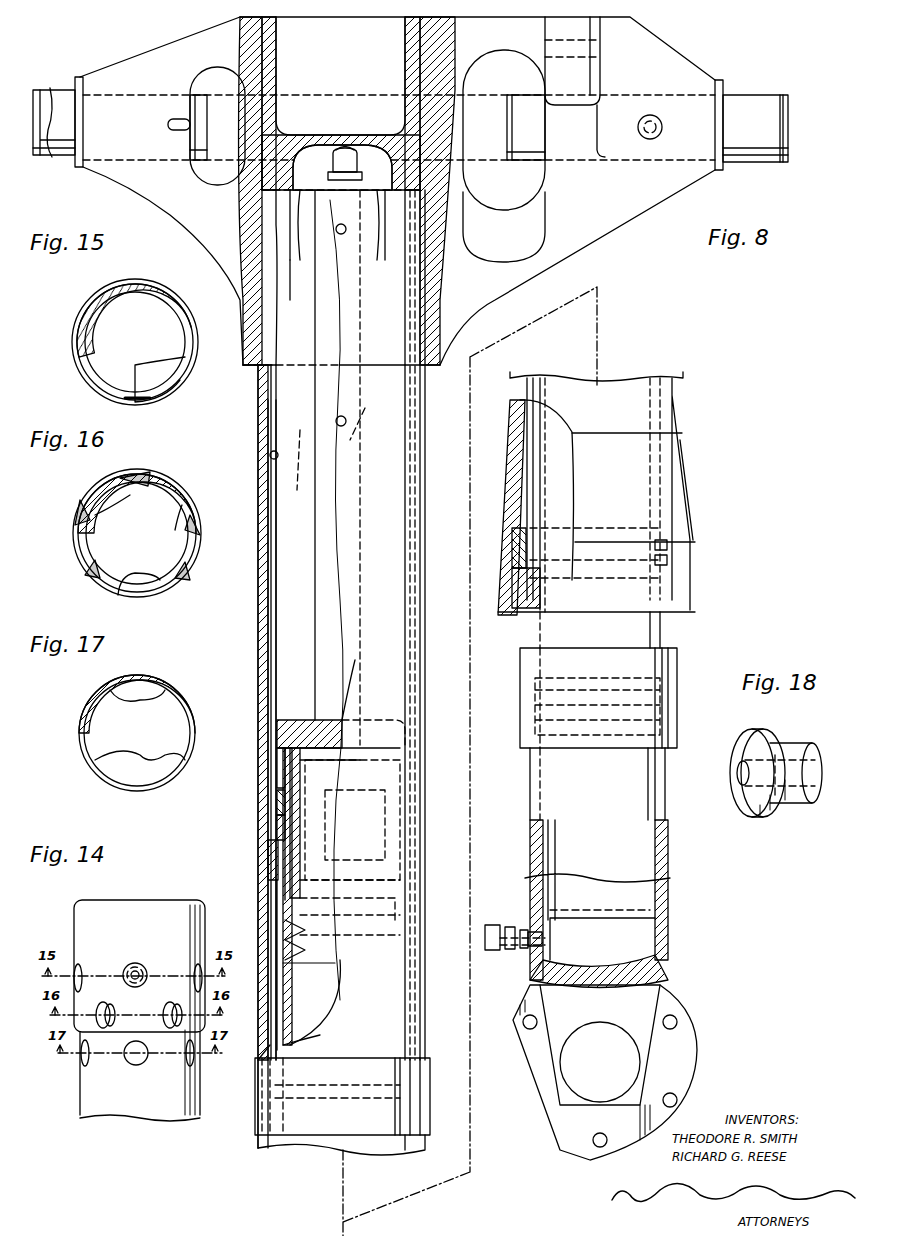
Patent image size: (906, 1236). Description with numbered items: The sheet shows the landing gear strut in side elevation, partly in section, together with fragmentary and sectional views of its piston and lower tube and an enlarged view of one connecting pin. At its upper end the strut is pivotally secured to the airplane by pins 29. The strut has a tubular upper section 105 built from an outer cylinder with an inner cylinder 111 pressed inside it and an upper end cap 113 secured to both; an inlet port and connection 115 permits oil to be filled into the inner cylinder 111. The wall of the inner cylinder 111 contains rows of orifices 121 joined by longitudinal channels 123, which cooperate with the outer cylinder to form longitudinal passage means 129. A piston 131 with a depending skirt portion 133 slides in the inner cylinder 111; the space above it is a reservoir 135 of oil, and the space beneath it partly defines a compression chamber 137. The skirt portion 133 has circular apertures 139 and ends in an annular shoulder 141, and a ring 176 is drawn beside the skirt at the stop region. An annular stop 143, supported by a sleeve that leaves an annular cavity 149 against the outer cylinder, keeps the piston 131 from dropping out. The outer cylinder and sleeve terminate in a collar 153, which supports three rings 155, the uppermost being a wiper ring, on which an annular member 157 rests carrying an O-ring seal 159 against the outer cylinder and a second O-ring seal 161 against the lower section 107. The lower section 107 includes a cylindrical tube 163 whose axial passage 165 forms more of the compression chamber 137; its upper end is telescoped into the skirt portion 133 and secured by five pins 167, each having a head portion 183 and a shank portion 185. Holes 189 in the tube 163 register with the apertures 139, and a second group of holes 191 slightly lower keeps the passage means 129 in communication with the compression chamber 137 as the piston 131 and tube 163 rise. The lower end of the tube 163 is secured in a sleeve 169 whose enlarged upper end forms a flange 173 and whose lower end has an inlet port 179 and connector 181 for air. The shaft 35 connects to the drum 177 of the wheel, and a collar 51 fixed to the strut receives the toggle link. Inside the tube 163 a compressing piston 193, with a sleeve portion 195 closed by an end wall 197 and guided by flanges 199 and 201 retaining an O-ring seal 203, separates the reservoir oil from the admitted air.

In FIG. 8, the pins 29 is at (62, 95).
In FIG. 8, the upper end cap 113 is at (290, 145).
In FIG. 8, the inlet port and connection 115 is at (348, 150).
In FIG. 8, the orifices 121 is at (338, 232).
In FIG. 8, the reservoir 135 is at (297, 270).
In FIG. 8, the longitudinal passage means 129 is at (268, 495).
In FIG. 8, the inner cylinder 111 is at (276, 550).
In FIG. 8, the tubular upper section 105 is at (258, 655).
In FIG. 8, the channels 123 is at (326, 512).
In FIG. 8, the sleeve portion 195 is at (322, 720).
In FIG. 8, the piston 131 is at (355, 690).
In FIG. 8, the end wall 197 is at (355, 720).
In FIG. 8, the compressing piston 193 is at (335, 765).
In FIG. 8, the ring 176 is at (277, 782).
In FIG. 8, the apertures 139 is at (280, 815).
In FIG. 16, the apertures 139 is at (200, 495).
In FIG. 14, the apertures 139 is at (100, 1002).
In FIG. 8, the holes 189 is at (290, 815).
In FIG. 16, the holes 189 is at (138, 545).
In FIG. 14, the holes 189 is at (165, 1010).
In FIG. 18, the holes 189 is at (737, 774).
In FIG. 8, the second group of holes 191 is at (300, 845).
In FIG. 17, the second group of holes 191 is at (140, 727).
In FIG. 14, the second group of holes 191 is at (185, 1060).
In FIG. 8, the annular shoulder 141 is at (278, 830).
In FIG. 8, the annular stop 143 is at (270, 860).
In FIG. 8, the annular cavity 149 is at (272, 900).
In FIG. 8, the guiding flange 199 is at (300, 888).
In FIG. 8, the O-ring seal 203 is at (300, 925).
In FIG. 8, the guiding flange 201 is at (310, 950).
In FIG. 15, the cylindrical tube 163 is at (82, 332).
In FIG. 16, the cylindrical tube 163 is at (170, 498).
In FIG. 17, the cylindrical tube 163 is at (110, 780).
In FIG. 14, the cylindrical tube 163 is at (135, 1110).
In FIG. 8, the compression chamber 137 is at (320, 1008).
In FIG. 8, the cylindrical passage 165 is at (320, 1035).
In FIG. 8, the collar 51 is at (430, 1095).
In FIG. 8, the collar 153 is at (688, 486).
In FIG. 8, the second O-ring seal 161 is at (560, 560).
In FIG. 8, the O-ring seal 159 is at (512, 540).
In FIG. 8, the annular member 157 is at (512, 580).
In FIG. 8, the rings 155 is at (518, 614).
In FIG. 8, the flange 173 is at (678, 680).
In FIG. 8, the tubular lower section 107 is at (672, 770).
In FIG. 8, the sleeve 169 is at (668, 862).
In FIG. 8, the connector 181 is at (492, 925).
In FIG. 8, the inlet port 179 is at (545, 940).
In FIG. 8, the drum 177 is at (690, 1022).
In FIG. 8, the shaft 35 is at (640, 1012).
In FIG. 15, the skirt portion 133 is at (76, 328).
In FIG. 16, the skirt portion 133 is at (122, 594).
In FIG. 15, the pins 167 is at (165, 290).
In FIG. 14, the pins 167 is at (195, 960).
In FIG. 18, the pins 167 is at (785, 740).
In FIG. 18, the shank portion 185 is at (812, 752).
In FIG. 18, the head portion 183 is at (775, 810).